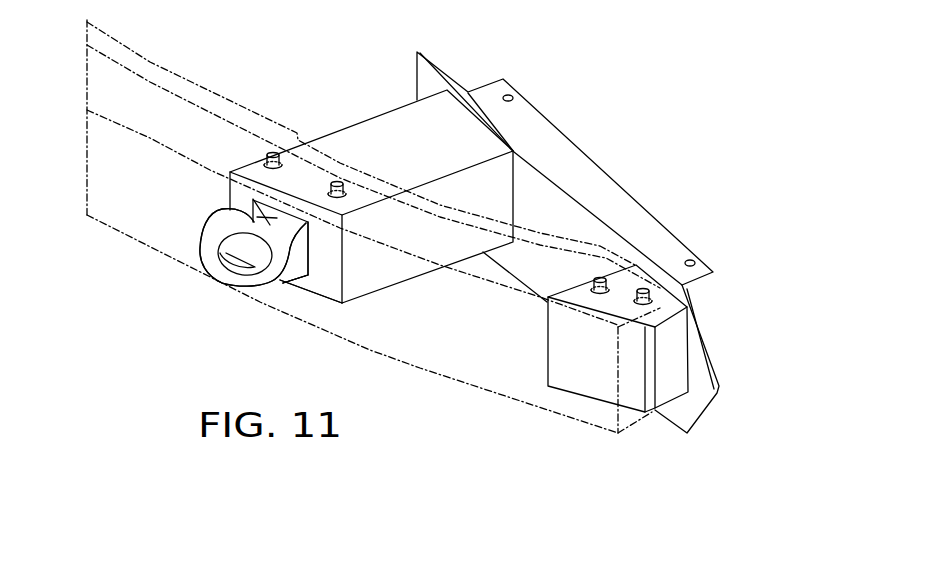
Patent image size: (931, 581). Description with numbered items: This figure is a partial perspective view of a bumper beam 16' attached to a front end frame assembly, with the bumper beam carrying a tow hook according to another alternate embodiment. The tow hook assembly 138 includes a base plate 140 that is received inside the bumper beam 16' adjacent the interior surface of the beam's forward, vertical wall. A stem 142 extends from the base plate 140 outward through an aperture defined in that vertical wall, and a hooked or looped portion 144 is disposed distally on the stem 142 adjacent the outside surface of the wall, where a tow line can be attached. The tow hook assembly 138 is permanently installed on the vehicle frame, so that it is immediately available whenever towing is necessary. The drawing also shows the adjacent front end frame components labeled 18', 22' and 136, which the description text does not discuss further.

The bumper beam 16' is at (373, 237).
The crush box / energy absorber 18' is at (660, 380).
The crush box / energy absorber 22' is at (371, 161).
The mounting bracket 136 is at (568, 216).
The tow hook assembly 138 is at (198, 295).
The base plate 140 is at (318, 282).
The stem 142 is at (222, 209).
The hooked or looped portion 144 is at (227, 285).